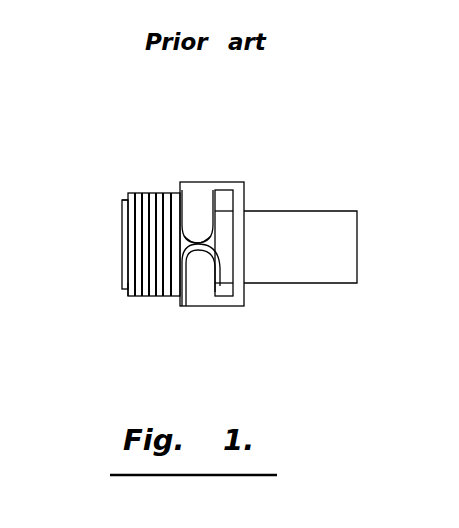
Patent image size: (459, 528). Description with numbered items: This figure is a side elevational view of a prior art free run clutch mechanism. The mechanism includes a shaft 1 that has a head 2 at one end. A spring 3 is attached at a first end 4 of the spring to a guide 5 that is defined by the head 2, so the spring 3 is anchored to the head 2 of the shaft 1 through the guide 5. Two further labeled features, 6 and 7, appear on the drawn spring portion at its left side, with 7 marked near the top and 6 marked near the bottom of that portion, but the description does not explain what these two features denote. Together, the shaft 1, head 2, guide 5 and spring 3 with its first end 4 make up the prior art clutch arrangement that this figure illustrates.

The shaft 1 is at (283, 237).
The head 2 is at (205, 283).
The spring 3 is at (165, 225).
The first end 4 is at (203, 247).
The guide 5 is at (190, 237).
The thread end 6 is at (128, 283).
The thread start 7 is at (125, 203).